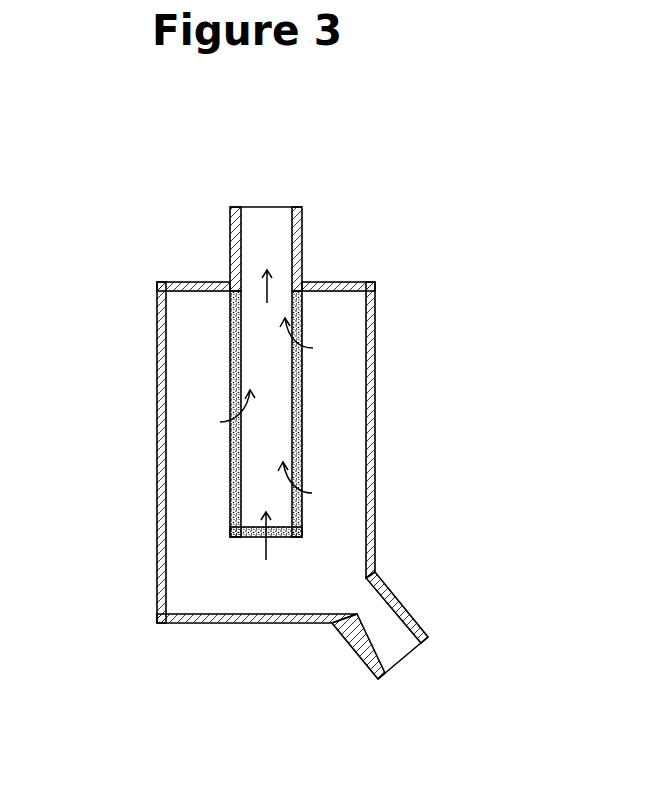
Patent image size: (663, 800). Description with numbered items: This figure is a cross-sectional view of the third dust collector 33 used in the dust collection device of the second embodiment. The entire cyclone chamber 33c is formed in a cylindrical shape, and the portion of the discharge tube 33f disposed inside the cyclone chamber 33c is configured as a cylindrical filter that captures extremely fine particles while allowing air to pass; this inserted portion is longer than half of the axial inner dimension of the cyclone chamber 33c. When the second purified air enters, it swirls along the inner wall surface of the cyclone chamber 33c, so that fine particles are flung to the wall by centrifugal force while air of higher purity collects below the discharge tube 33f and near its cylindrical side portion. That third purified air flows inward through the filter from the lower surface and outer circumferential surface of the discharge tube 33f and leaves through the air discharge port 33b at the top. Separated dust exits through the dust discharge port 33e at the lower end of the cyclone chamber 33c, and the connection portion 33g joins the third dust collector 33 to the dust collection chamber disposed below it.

The third dust collector 33 is at (178, 218).
The discharge port 33b is at (272, 207).
The cyclone chamber 33c is at (158, 365).
The dust discharge port 33e is at (350, 604).
The discharge tube 33f is at (302, 388).
The connection portion 33g is at (413, 617).